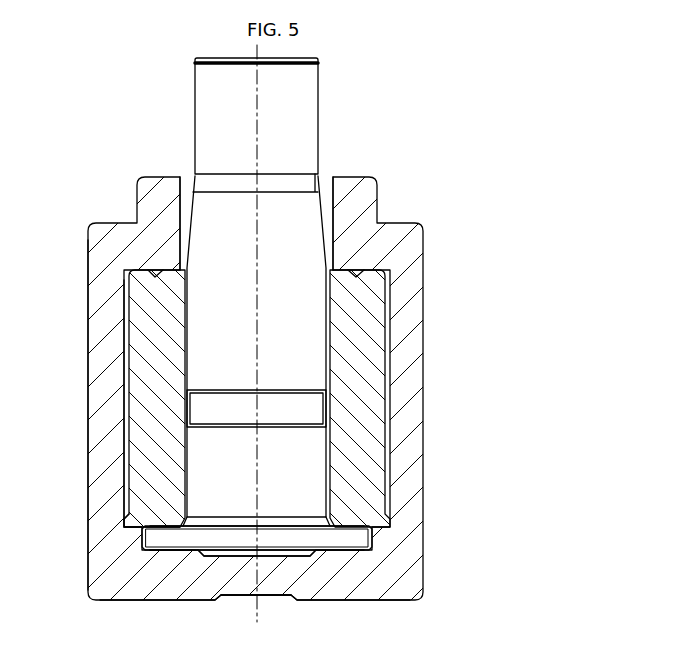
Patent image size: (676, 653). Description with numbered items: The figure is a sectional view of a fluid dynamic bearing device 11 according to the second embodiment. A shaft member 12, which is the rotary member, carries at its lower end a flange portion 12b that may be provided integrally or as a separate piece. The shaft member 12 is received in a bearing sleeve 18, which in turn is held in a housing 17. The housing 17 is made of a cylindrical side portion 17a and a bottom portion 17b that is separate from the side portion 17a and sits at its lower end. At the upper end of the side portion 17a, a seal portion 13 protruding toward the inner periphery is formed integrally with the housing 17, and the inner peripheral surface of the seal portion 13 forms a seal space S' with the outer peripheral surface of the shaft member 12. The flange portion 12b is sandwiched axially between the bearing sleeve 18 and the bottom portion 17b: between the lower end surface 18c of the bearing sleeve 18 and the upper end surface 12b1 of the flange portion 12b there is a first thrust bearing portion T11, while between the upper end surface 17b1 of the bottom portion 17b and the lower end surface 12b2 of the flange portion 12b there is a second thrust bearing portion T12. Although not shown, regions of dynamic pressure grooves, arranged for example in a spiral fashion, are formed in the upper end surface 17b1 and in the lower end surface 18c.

The fluid dynamic bearing device 11 is at (527, 172).
The shaft member 12 is at (320, 127).
The flange portion 12b is at (362, 538).
The upper end surface of the flange portion 12b1 is at (350, 524).
The lower end surface of the flange portion 12b2 is at (347, 553).
The seal portion 13 is at (162, 231).
The housing 17 is at (383, 605).
The cylindrical side portion 17a is at (102, 402).
The bottom portion 17b is at (303, 586).
The upper end surface of the bottom portion 17b1 is at (194, 548).
The bearing sleeve 18 is at (391, 303).
The lower end surface of the bearing sleeve 18c is at (128, 530).
The seal space S' is at (250, 199).
The first thrust bearing portion T11 is at (159, 516).
The second thrust bearing portion T12 is at (170, 555).